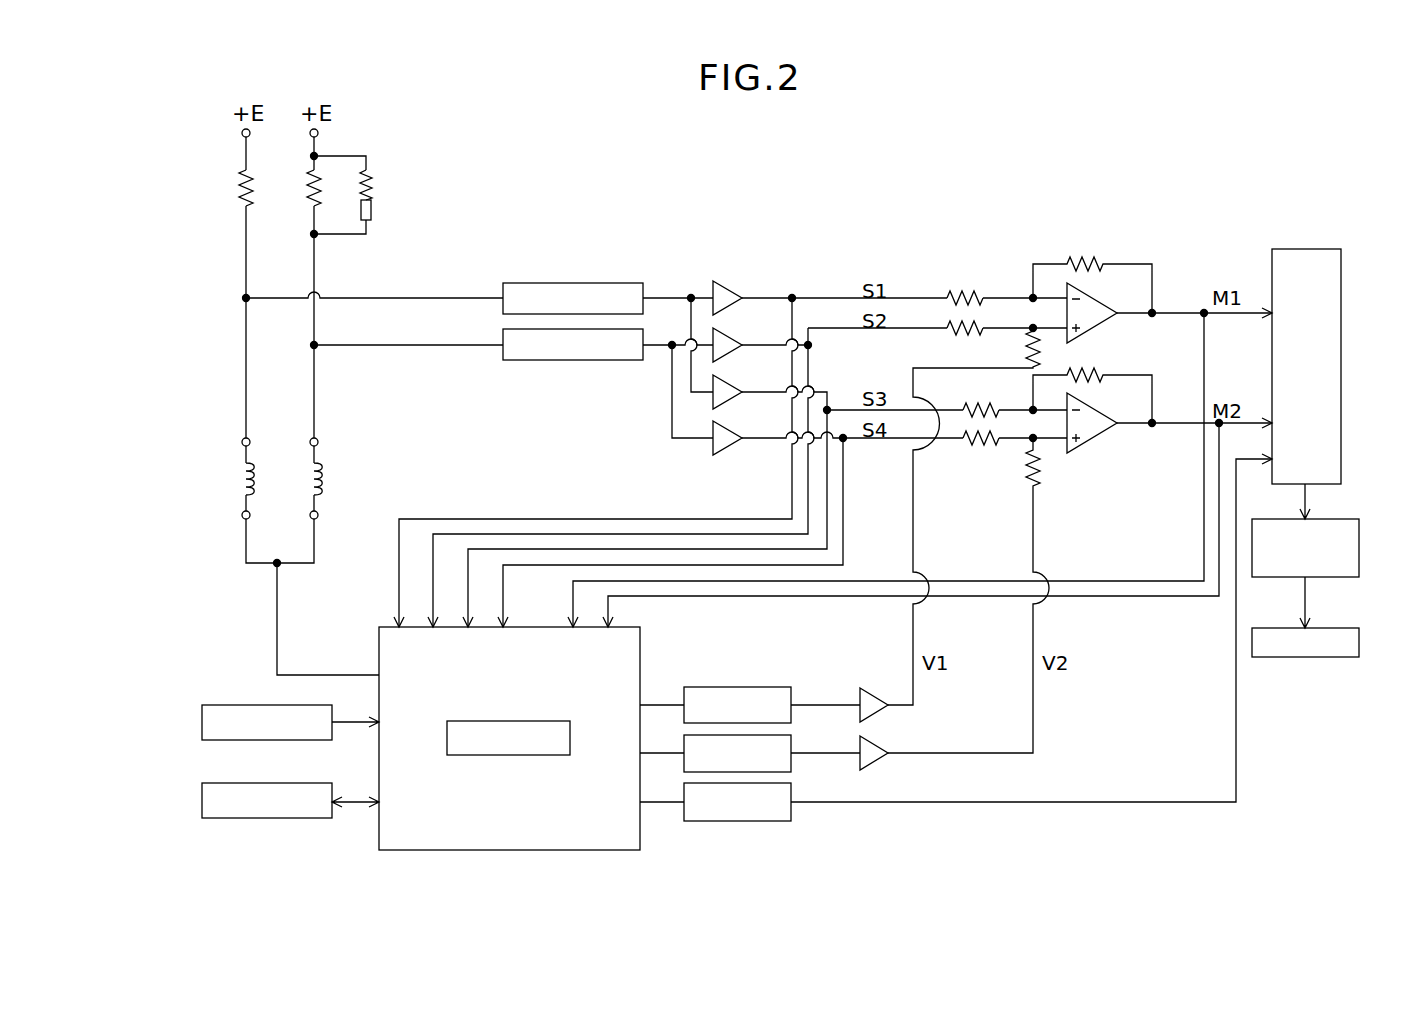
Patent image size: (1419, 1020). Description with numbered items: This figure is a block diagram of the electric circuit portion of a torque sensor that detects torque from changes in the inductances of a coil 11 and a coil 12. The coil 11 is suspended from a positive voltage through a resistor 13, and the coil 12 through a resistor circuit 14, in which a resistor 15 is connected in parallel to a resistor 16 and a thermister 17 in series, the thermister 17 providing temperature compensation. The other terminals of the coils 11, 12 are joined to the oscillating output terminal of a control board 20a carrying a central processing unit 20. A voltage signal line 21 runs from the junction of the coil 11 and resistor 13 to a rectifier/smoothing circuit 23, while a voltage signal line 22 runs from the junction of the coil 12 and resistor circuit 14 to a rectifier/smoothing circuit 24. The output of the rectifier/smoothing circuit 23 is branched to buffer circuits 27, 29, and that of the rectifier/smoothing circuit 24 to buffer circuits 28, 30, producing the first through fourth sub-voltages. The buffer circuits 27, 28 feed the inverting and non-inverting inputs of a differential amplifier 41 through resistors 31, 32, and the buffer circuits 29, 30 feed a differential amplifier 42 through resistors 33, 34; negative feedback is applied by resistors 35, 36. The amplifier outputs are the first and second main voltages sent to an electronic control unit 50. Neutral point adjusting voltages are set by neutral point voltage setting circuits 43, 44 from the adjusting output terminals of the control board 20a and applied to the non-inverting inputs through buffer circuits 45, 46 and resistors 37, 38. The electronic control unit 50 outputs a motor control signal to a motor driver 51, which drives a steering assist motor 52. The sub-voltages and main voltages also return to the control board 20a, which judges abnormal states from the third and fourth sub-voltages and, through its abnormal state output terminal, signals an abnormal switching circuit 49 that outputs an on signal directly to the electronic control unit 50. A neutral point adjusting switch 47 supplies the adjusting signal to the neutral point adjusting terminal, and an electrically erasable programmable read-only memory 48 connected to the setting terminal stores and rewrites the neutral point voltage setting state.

The coil 11 is at (240, 472).
The coil 12 is at (322, 470).
The resistor 13 is at (240, 185).
The resistor circuit 14 is at (427, 186).
The resistor 15 is at (312, 208).
The resistor 16 is at (368, 170).
The thermister 17 is at (372, 208).
The CPU 20 is at (509, 767).
The control board 20a is at (552, 850).
The voltage signal line 21 is at (322, 298).
The voltage signal line 22 is at (344, 345).
The rectifier/smoothing circuit 23 is at (503, 284).
The rectifier/smoothing circuit 24 is at (503, 330).
The buffer circuit 27 is at (728, 292).
The buffer circuit 28 is at (728, 339).
The buffer circuit 29 is at (728, 386).
The buffer circuit 30 is at (728, 432).
The resistor 31 is at (968, 293).
The resistor 32 is at (953, 334).
The resistor 33 is at (982, 406).
The resistor 34 is at (972, 445).
The resistor 35 is at (1085, 260).
The resistor 36 is at (1090, 372).
The resistor 37 is at (1030, 348).
The resistor 38 is at (1040, 478).
The differential amplifier 41 is at (1092, 306).
The differential amplifier 42 is at (1092, 442).
The neutral point voltage setting circuit 43 is at (791, 692).
The neutral point voltage setting circuit 44 is at (791, 740).
The buffer circuit 45 is at (870, 693).
The buffer circuit 46 is at (878, 766).
The neutral point adjusting switch 47 is at (202, 721).
The E²PROM 48 is at (202, 801).
The abnormal switching circuit 49 is at (791, 820).
The electronic control unit 50 is at (1304, 249).
The motor driver 51 is at (1359, 542).
The motor 52 is at (1359, 650).